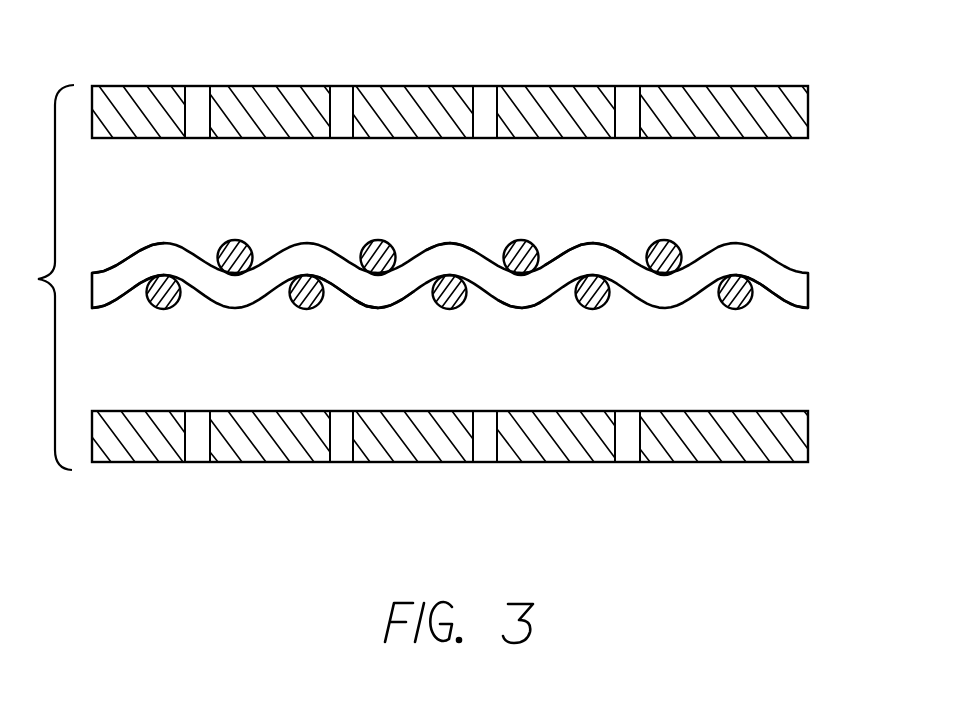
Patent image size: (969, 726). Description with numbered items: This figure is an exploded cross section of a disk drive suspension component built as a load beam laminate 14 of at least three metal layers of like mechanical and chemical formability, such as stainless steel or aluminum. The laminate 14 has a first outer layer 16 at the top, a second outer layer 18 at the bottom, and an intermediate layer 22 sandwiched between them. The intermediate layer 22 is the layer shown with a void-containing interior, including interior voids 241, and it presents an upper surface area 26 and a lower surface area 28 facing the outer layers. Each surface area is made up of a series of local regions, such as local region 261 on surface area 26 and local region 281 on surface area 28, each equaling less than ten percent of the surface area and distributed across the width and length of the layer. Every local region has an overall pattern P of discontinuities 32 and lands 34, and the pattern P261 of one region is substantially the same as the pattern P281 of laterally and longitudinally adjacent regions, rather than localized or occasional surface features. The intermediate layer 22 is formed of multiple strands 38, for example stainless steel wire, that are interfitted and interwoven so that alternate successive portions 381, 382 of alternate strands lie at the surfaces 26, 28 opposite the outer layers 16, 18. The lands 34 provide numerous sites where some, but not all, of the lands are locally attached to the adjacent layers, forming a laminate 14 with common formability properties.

The load beam laminate 14 is at (38, 277).
The first outer layer 16 is at (808, 120).
The second outer layer 18 is at (808, 437).
The intermediate layer 22 is at (808, 295).
The surface area 26 is at (122, 252).
The surface area 28 is at (130, 308).
The interior void 241 is at (255, 253).
The local region 261 is at (192, 303).
The local region 281 is at (327, 303).
The discontinuity 32 is at (402, 253).
The land 34 is at (585, 242).
The strand 38 is at (703, 258).
The successive portion of interwoven strand 381 is at (523, 311).
The successive portion of interwoven strand 382 is at (450, 241).
The overall pattern P is at (663, 194).
The pattern of local region P261 is at (304, 190).
The pattern of local region P281 is at (153, 338).